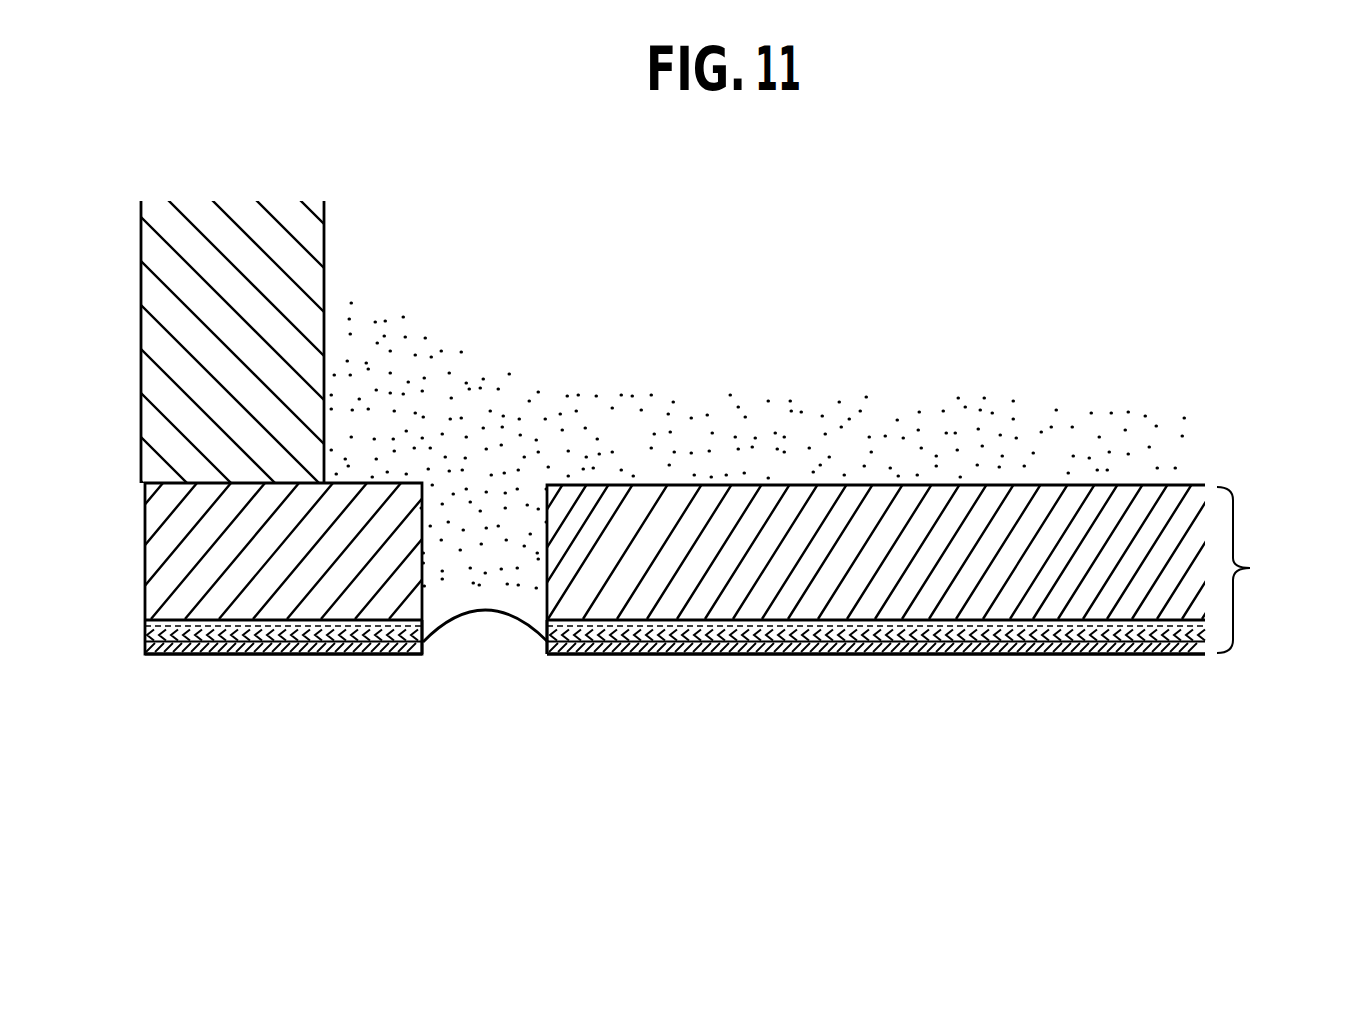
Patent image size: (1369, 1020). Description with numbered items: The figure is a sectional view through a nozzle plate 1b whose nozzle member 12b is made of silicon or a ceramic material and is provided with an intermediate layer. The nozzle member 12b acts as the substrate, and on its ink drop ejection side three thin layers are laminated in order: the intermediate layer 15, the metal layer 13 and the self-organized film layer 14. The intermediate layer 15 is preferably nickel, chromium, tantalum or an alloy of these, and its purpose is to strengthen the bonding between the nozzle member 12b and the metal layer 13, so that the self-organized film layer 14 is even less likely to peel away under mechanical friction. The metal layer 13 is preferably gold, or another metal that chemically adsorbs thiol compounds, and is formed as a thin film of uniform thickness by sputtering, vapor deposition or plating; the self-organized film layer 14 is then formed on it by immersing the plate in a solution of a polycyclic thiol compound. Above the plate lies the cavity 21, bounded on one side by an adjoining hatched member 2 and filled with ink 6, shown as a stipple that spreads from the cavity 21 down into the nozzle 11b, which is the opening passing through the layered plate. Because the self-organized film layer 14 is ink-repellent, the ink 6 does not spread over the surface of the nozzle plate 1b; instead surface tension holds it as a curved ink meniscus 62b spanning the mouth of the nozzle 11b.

The wall / partition member 2 is at (295, 272).
The cavity 21 is at (758, 379).
The ink 6 is at (452, 575).
The nozzle member 12b is at (367, 568).
The ink meniscus 62b is at (503, 617).
The nozzle 11b is at (480, 632).
The intermediate layer 15 is at (947, 658).
The metal layer 13 is at (902, 658).
The self-organized film layer 14 is at (863, 658).
The nozzle plate assembly 1b is at (1250, 570).